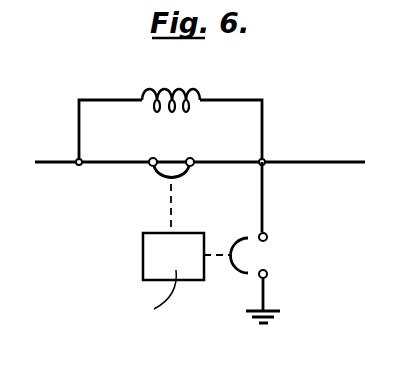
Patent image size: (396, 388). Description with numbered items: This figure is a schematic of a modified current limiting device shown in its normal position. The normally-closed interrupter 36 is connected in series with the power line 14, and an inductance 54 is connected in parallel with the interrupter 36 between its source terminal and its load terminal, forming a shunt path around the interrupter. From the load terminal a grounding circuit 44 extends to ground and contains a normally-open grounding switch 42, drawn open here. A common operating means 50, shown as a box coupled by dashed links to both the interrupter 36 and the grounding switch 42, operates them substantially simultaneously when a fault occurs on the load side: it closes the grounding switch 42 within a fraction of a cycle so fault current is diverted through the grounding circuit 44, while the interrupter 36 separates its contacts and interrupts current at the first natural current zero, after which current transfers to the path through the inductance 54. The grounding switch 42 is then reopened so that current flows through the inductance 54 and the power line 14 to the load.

The power line 14 is at (313, 162).
The inductance 54 is at (143, 92).
The normally-closed interrupter 36 is at (172, 167).
The common operating means 50 is at (143, 250).
The normally-open grounding switch 42 is at (257, 254).
The grounding circuit 44 is at (263, 290).